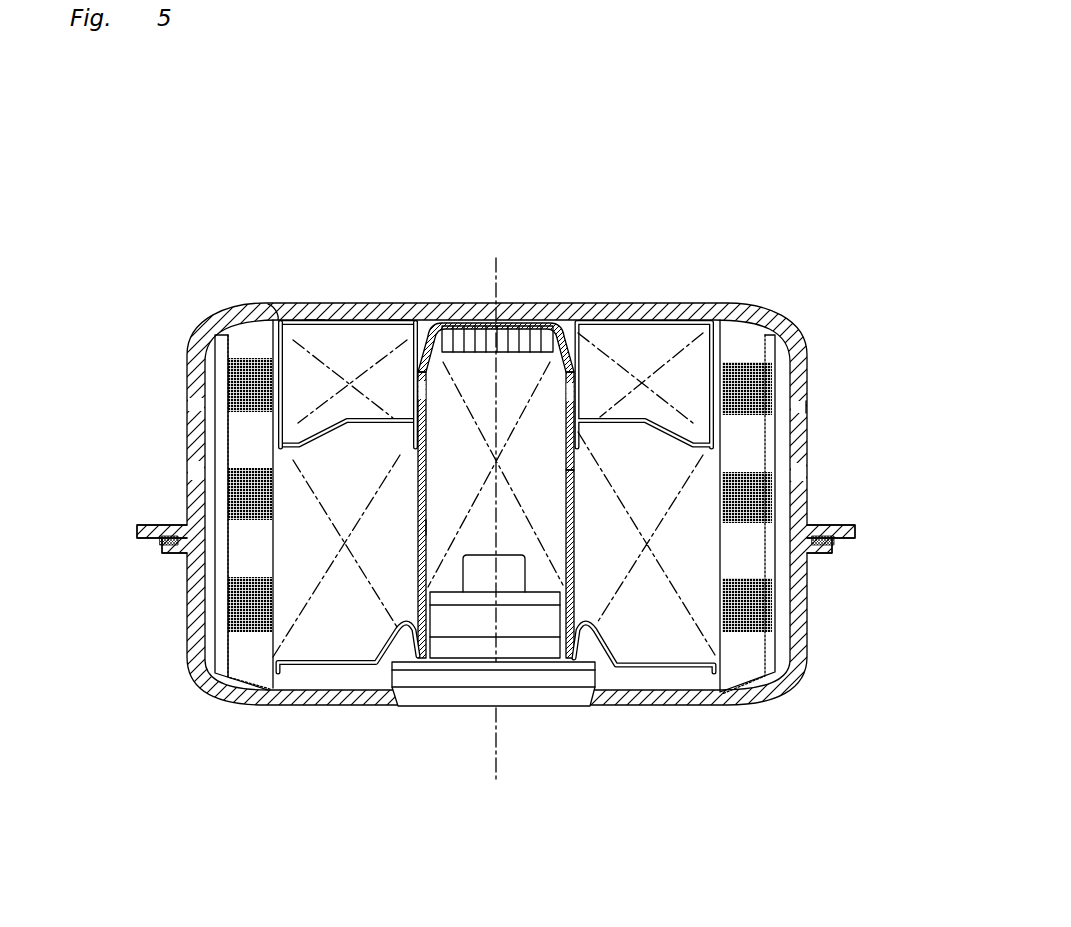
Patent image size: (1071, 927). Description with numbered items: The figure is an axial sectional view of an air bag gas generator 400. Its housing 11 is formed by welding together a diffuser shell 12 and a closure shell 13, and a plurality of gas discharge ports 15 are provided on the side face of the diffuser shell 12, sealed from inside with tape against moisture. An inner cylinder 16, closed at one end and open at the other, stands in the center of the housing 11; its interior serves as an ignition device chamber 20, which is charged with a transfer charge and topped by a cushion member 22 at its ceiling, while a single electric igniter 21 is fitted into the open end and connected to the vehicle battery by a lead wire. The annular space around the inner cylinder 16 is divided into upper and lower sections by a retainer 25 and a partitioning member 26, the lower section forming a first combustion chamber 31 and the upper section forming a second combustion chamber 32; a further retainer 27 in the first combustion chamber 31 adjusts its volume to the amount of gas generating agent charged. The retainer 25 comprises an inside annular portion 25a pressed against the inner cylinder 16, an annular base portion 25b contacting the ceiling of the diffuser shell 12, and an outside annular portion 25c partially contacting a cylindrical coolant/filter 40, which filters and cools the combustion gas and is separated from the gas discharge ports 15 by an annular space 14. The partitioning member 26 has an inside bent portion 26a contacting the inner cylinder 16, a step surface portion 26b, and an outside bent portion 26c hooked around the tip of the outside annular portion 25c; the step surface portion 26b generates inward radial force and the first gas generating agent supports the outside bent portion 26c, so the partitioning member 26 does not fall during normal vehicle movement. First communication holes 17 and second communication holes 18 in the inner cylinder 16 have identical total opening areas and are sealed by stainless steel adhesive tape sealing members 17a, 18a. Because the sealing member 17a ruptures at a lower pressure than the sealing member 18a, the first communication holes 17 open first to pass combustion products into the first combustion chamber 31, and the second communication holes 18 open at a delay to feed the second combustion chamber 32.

The air bag gas generator 400 is at (591, 243).
The retainer 25 is at (752, 313).
The inside annular portion 25a is at (400, 317).
The annular base portion 25b is at (315, 317).
The outside annular portion 25c is at (277, 303).
The cushion member 22 is at (463, 315).
The gas discharge ports 15 is at (806, 404).
The diffuser shell 12 is at (808, 508).
The closure shell 13 is at (806, 580).
The housing 11 is at (938, 497).
The annular space 14 is at (208, 633).
The coolant/filter 40 is at (747, 660).
The ignition device chamber 20 is at (523, 468).
The second communication holes 18 is at (574, 398).
The sealing member 18a is at (430, 422).
The first communication holes 17 is at (574, 545).
The sealing member 17a is at (422, 525).
The electric igniter 21 is at (465, 628).
The retainer 27 is at (328, 667).
The partitioning member 26 is at (622, 427).
The inside bent portion 26a is at (408, 443).
The step surface portion 26b is at (380, 418).
The outside bent portion 26c is at (283, 450).
The inner cylinder 16 is at (417, 580).
The first combustion chamber 31 is at (668, 642).
The second combustion chamber 32 is at (628, 362).